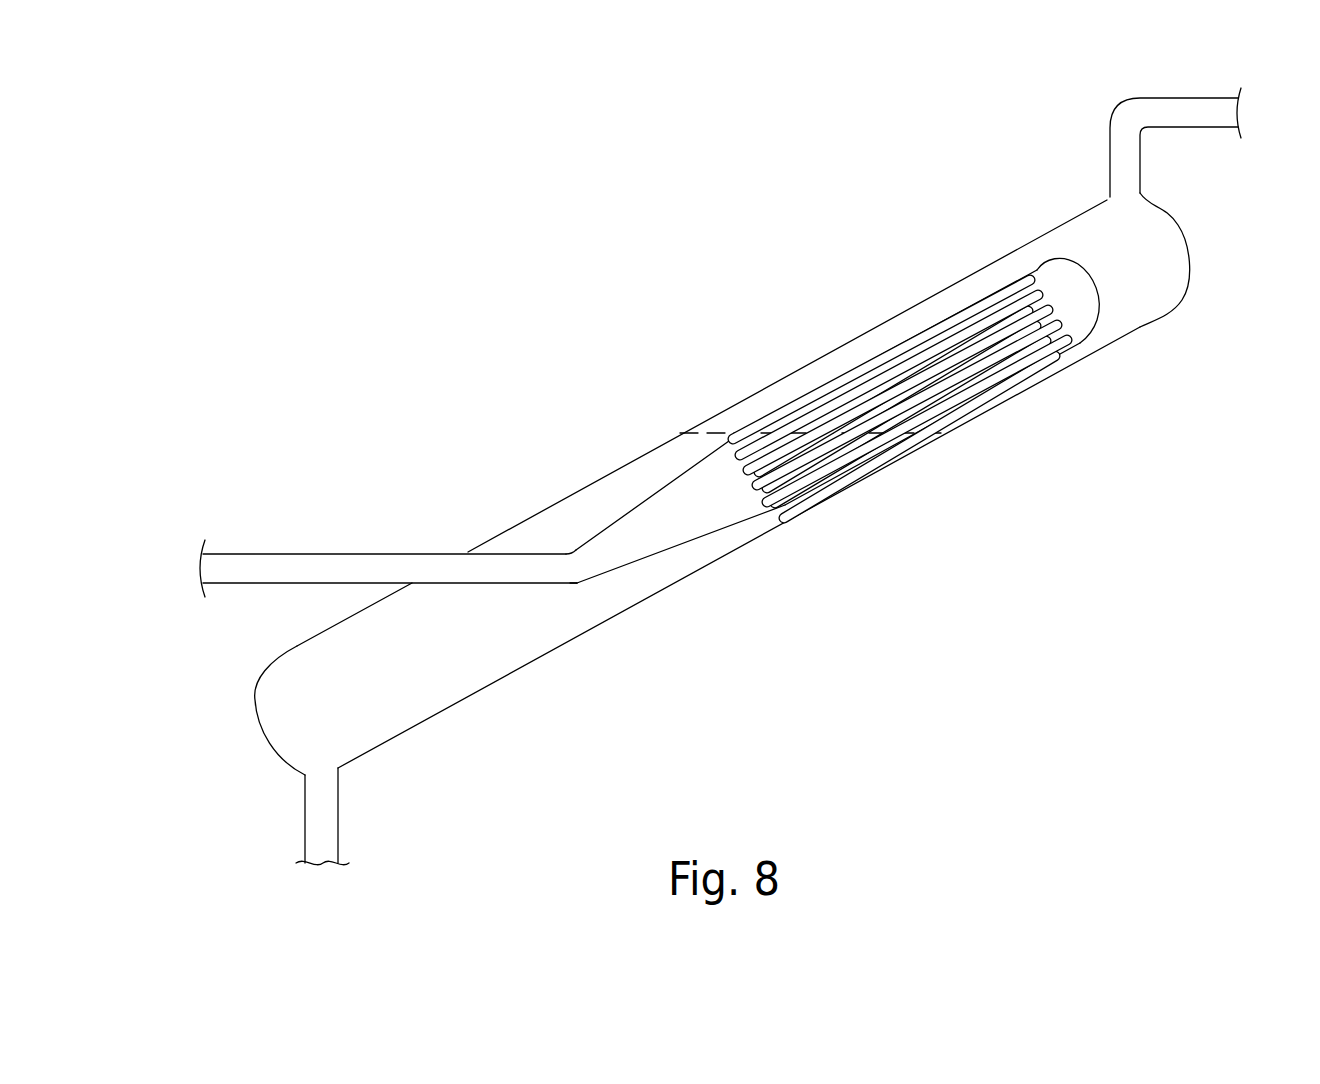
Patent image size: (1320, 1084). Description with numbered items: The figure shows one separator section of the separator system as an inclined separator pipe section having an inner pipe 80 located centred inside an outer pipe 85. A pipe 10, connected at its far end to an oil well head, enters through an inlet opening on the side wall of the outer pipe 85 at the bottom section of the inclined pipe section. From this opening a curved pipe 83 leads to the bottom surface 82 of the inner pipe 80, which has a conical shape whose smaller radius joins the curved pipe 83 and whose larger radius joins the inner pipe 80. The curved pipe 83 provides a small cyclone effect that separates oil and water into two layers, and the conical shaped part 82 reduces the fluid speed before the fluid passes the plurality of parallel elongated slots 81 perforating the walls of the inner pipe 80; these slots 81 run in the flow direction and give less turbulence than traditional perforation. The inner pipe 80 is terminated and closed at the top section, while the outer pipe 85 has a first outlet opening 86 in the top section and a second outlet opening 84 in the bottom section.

The pipe 10 is at (328, 554).
The inner pipe 80 is at (1058, 268).
The elongated slots 81 is at (1012, 365).
The conical shaped part 82 is at (643, 562).
The curved pipe 83 is at (577, 583).
The second outlet opening 84 is at (342, 815).
The outer pipe 85 is at (1140, 327).
The first outlet opening 86 is at (1197, 128).